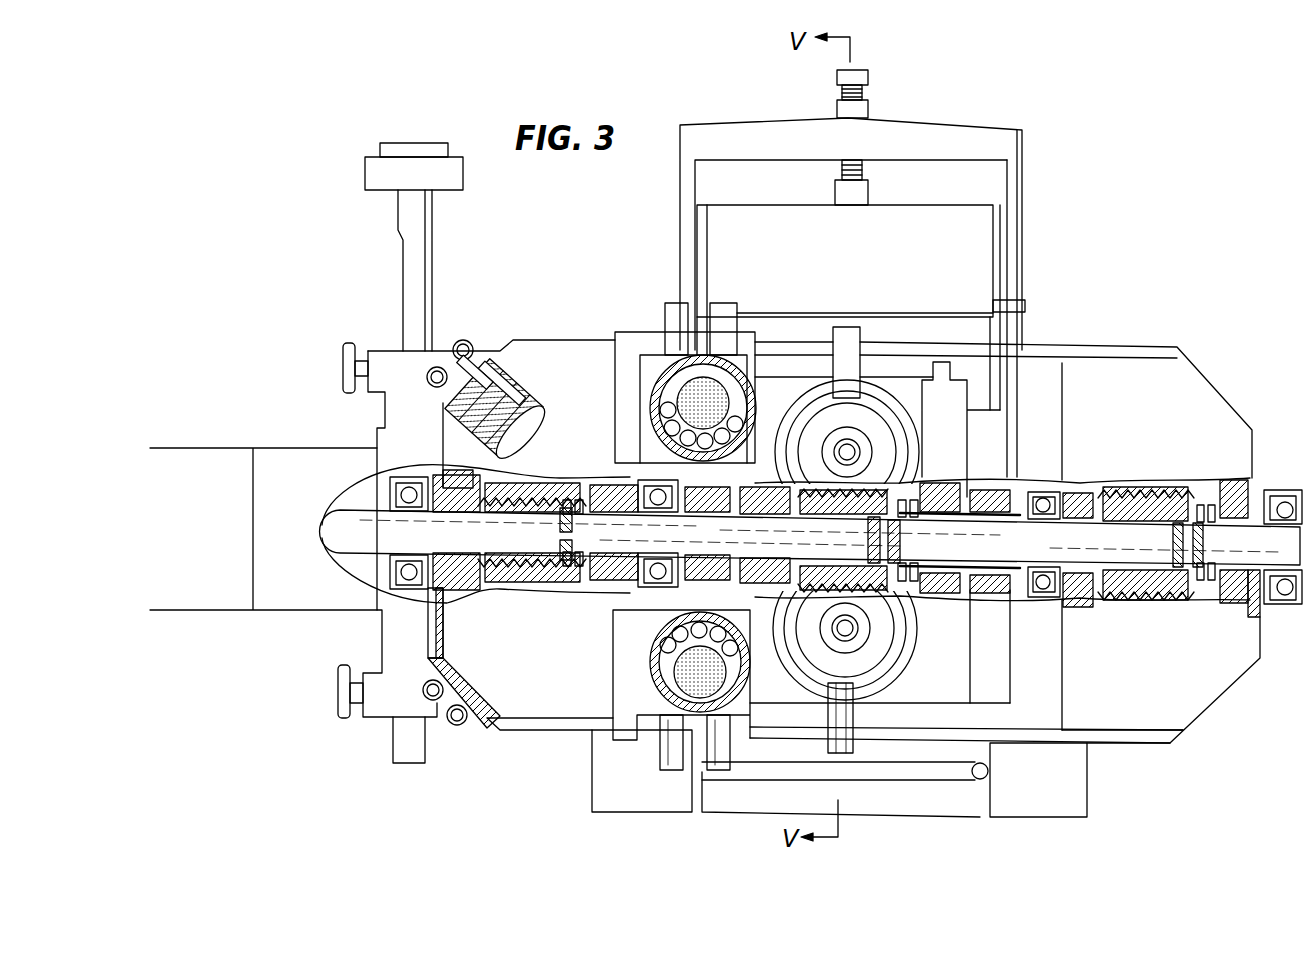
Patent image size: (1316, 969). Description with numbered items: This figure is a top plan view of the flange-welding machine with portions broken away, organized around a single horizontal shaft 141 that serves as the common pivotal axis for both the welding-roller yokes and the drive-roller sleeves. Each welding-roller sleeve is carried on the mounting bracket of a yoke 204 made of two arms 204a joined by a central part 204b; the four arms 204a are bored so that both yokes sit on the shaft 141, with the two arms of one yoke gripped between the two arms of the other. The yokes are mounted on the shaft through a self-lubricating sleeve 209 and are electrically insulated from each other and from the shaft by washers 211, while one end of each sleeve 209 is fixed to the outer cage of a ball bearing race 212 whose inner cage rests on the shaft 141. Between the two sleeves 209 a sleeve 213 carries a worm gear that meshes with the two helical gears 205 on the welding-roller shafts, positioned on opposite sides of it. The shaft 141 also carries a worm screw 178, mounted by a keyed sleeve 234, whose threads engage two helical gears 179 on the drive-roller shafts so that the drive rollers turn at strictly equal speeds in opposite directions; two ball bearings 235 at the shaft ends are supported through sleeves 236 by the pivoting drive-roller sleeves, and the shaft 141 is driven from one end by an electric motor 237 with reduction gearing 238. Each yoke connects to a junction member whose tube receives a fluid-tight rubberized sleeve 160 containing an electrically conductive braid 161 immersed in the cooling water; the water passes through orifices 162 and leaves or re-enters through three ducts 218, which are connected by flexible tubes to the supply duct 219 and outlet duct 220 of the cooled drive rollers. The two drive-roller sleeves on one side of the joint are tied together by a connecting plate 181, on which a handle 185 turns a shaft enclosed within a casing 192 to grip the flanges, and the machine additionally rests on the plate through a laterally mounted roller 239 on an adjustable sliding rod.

The shaft 141 is at (333, 548).
The fluid-tight rubberized sleeve 160 is at (650, 393).
The electrically conductive braid 161 is at (753, 340).
The orifices 162 is at (668, 655).
The worm screw 178 is at (525, 505).
The helical gears 179 is at (560, 505).
The connecting plate 181 is at (540, 728).
The handle 185 is at (745, 765).
The casing 192 is at (958, 800).
The yoke 204 is at (940, 666).
The arms 204a is at (775, 402).
The central part 204b is at (892, 387).
The helical gear 205 is at (843, 567).
The self-lubricating sleeve 209 is at (710, 505).
The washers 211 is at (917, 560).
The ball bearing race 212 is at (640, 582).
The sleeve 213 is at (803, 537).
The ducts 218 is at (668, 320).
The duct 219 is at (470, 352).
The outlet duct 220 is at (400, 352).
The sleeve 234 is at (548, 510).
The ball bearings 235 is at (400, 575).
The sleeves 236 is at (400, 590).
The electric motor 237 is at (190, 465).
The reduction gearing 238 is at (300, 463).
The roller 239 is at (383, 183).